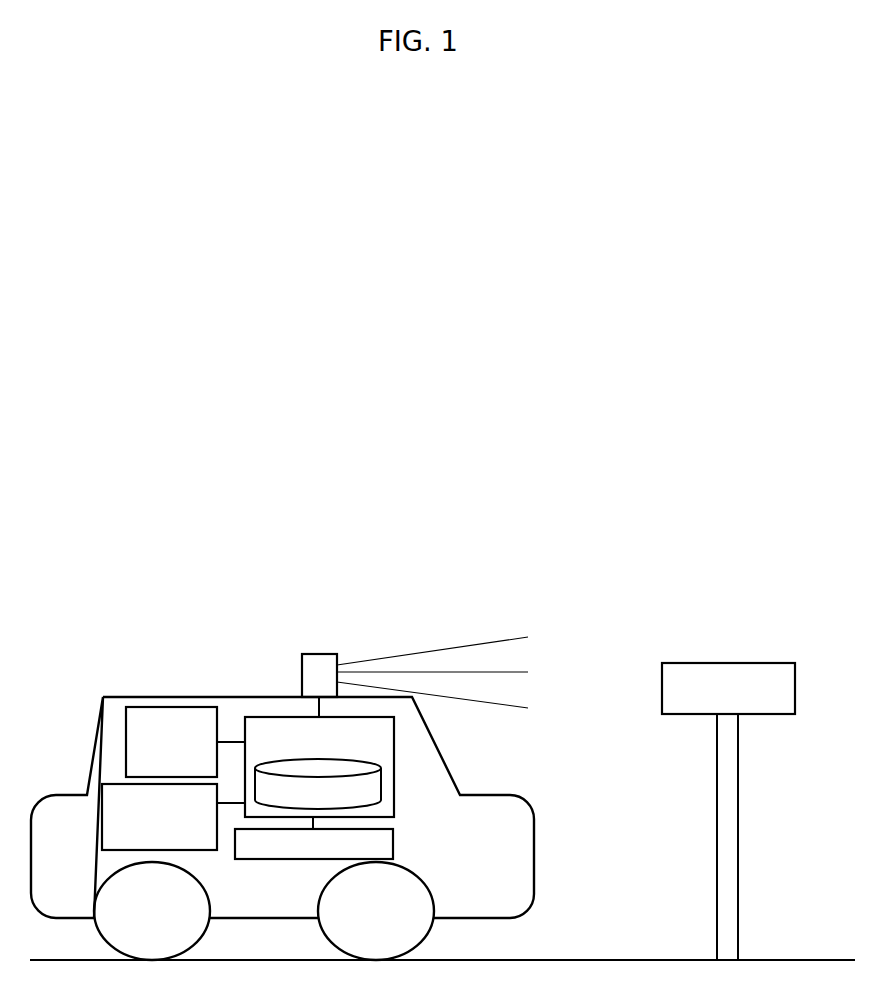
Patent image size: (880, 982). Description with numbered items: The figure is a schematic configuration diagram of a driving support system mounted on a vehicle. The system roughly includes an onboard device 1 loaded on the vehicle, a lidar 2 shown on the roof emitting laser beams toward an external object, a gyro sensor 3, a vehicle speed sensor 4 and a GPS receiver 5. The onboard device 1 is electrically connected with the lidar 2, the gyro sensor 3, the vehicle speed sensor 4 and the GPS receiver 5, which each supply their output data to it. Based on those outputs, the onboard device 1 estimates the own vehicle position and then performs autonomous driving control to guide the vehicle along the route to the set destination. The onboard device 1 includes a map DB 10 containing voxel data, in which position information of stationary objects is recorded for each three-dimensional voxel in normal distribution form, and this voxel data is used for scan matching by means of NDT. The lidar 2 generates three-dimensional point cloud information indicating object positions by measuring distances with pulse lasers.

The onboard device 1 is at (266, 717).
The lidar 2 is at (317, 654).
The gyro sensor 3 is at (327, 859).
The vehicle speed sensor 4 is at (126, 742).
The GPS receiver 5 is at (108, 838).
The map DB 10 is at (382, 792).